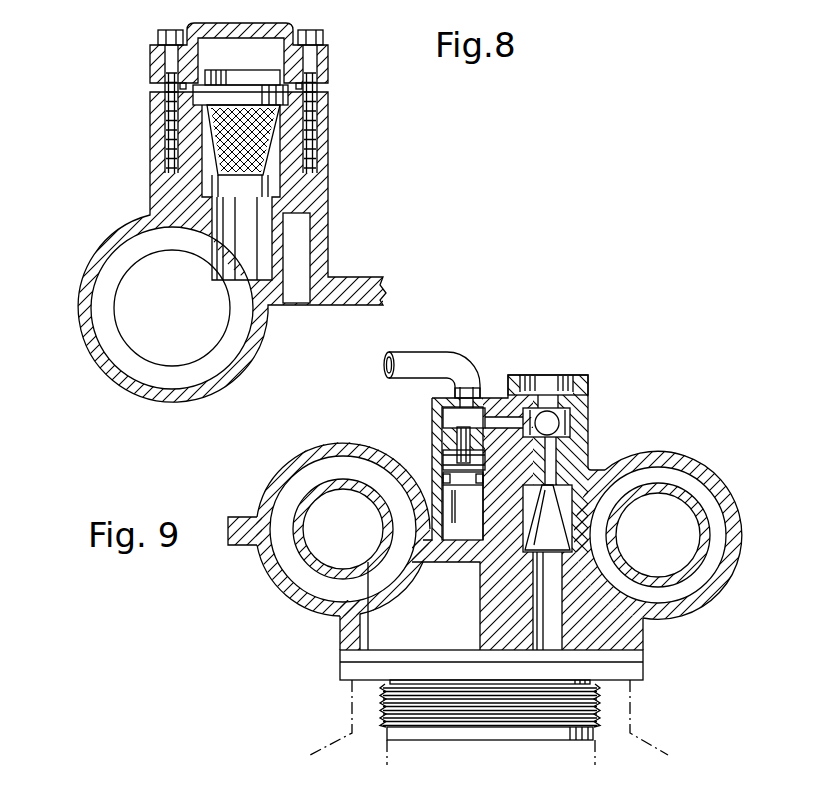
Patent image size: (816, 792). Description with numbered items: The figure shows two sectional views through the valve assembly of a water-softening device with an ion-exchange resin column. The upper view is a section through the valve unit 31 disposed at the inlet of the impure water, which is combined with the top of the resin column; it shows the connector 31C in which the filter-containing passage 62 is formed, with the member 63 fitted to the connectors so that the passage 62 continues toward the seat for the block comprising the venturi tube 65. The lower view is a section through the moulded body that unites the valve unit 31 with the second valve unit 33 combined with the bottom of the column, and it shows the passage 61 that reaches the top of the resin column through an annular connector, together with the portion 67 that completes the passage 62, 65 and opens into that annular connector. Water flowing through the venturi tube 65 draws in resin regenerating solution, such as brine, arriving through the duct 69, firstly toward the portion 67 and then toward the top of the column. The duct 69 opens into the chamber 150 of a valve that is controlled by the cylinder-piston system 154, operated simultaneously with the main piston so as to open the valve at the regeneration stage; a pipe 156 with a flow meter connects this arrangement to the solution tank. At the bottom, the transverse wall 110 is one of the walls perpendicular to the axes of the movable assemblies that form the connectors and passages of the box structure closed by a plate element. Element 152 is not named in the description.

In FIG. 8, the valve unit 31 is at (122, 227).
In FIG. 9, the valve unit 31 is at (662, 458).
In FIG. 8, the connector 31C is at (150, 153).
In FIG. 9, the second valve unit 33 is at (282, 477).
In FIG. 9, the passage 61 is at (418, 637).
In FIG. 8, the passage containing a filter 62 is at (272, 140).
In FIG. 8, the member 63 is at (278, 24).
In FIG. 9, the venturi tube 65 is at (555, 450).
In FIG. 9, the portion 67 is at (513, 604).
In FIG. 9, the duct 69 is at (498, 420).
In FIG. 9, the transverse wall 110 is at (385, 707).
In FIG. 9, the chamber 150 is at (460, 420).
In FIG. 9, the pin 152 is at (463, 457).
In FIG. 9, the cylinder-piston system 154 is at (455, 490).
In FIG. 9, the pipe 156 is at (420, 363).